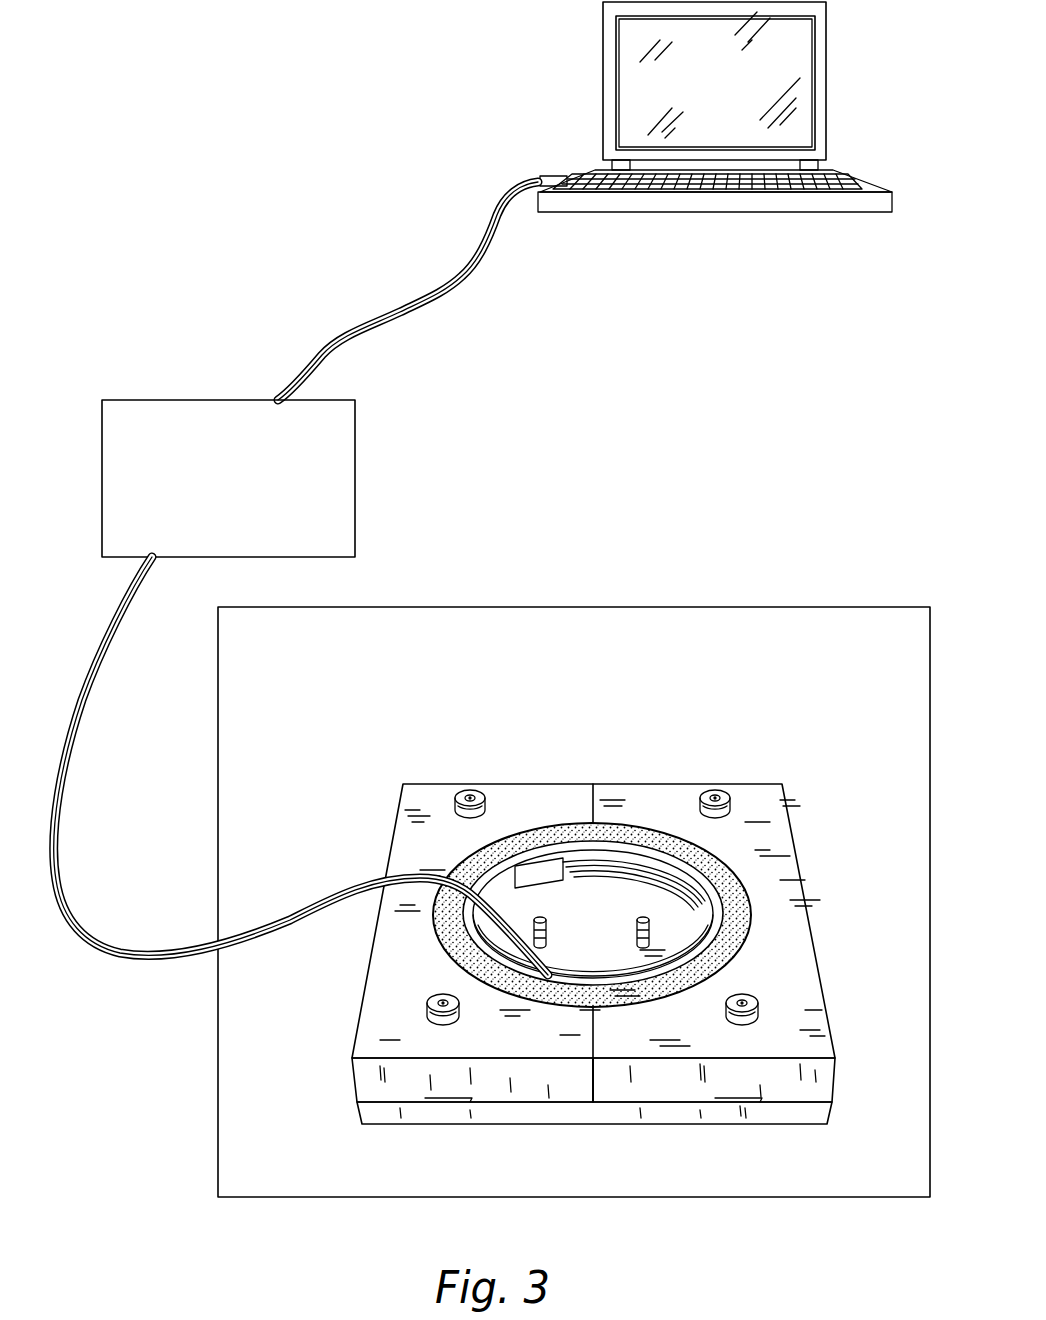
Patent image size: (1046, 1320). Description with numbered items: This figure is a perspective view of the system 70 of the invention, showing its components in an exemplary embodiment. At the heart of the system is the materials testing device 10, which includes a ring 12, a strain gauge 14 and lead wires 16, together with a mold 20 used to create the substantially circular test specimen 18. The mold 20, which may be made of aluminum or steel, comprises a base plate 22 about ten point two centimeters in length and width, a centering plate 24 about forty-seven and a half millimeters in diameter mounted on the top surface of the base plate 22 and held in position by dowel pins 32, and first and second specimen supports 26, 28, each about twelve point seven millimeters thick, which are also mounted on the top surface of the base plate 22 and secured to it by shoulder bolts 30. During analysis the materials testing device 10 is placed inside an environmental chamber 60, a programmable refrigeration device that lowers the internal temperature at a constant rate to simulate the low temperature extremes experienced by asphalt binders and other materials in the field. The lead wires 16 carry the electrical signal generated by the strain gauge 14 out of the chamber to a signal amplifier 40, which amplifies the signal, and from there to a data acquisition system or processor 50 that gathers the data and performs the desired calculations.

The materials testing device 10 is at (710, 750).
The ring 12 is at (607, 843).
The strain gauge 14 is at (567, 850).
The lead wires 16 is at (348, 884).
The test specimen 18 is at (740, 920).
The mold 20 is at (375, 1150).
The base plate 22 is at (725, 1123).
The centering plate 24 is at (503, 900).
The first specimen support 26 is at (352, 1084).
The second specimen support 28 is at (835, 1020).
The shoulder bolts 30 is at (453, 790).
The dowel pins 32 is at (548, 918).
The signal amplifier 40 is at (355, 488).
The data acquisition system or processor 50 is at (828, 106).
The environmental chamber 60 is at (748, 607).
The system 70 is at (280, 162).